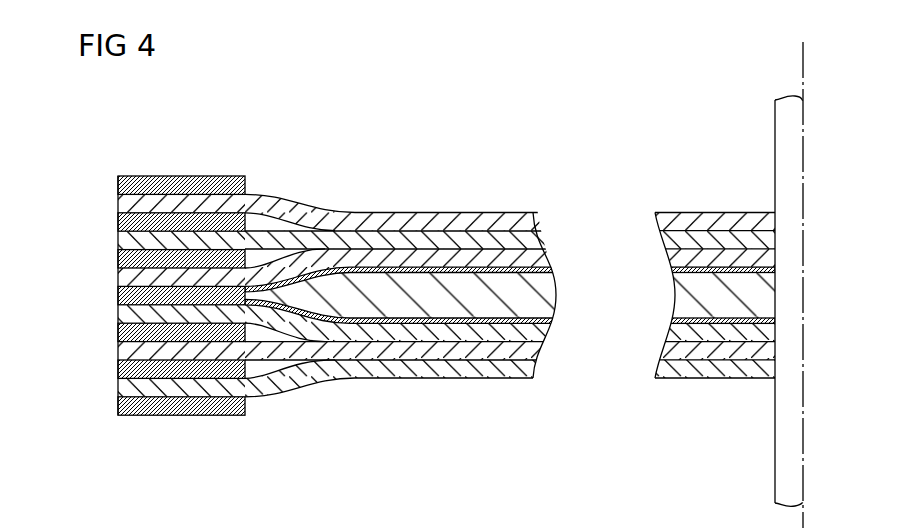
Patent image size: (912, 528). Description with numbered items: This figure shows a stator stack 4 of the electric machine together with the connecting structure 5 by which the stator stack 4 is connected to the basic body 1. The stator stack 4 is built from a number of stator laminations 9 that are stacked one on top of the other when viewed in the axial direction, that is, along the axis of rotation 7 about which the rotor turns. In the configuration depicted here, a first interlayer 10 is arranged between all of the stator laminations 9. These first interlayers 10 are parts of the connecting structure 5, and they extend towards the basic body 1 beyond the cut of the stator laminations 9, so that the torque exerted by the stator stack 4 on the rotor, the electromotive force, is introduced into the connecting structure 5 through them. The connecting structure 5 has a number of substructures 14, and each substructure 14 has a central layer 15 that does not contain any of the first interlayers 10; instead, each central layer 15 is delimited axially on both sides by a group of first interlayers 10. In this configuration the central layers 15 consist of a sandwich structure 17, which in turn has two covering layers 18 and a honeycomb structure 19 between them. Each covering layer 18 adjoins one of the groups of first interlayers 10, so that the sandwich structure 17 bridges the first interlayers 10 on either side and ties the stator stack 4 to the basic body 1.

The basic body 1 is at (792, 478).
The stator stack 4 is at (176, 159).
The connecting structure 5 is at (429, 160).
The axis of rotation 7 is at (800, 145).
The stator laminations 9 is at (122, 185).
The first interlayer 10 is at (377, 250).
The substructure 14 is at (563, 210).
The central layer 15 is at (770, 299).
The sandwich structure 17 is at (788, 286).
The covering layers 18 is at (692, 268).
The honeycomb structure 19 is at (446, 300).